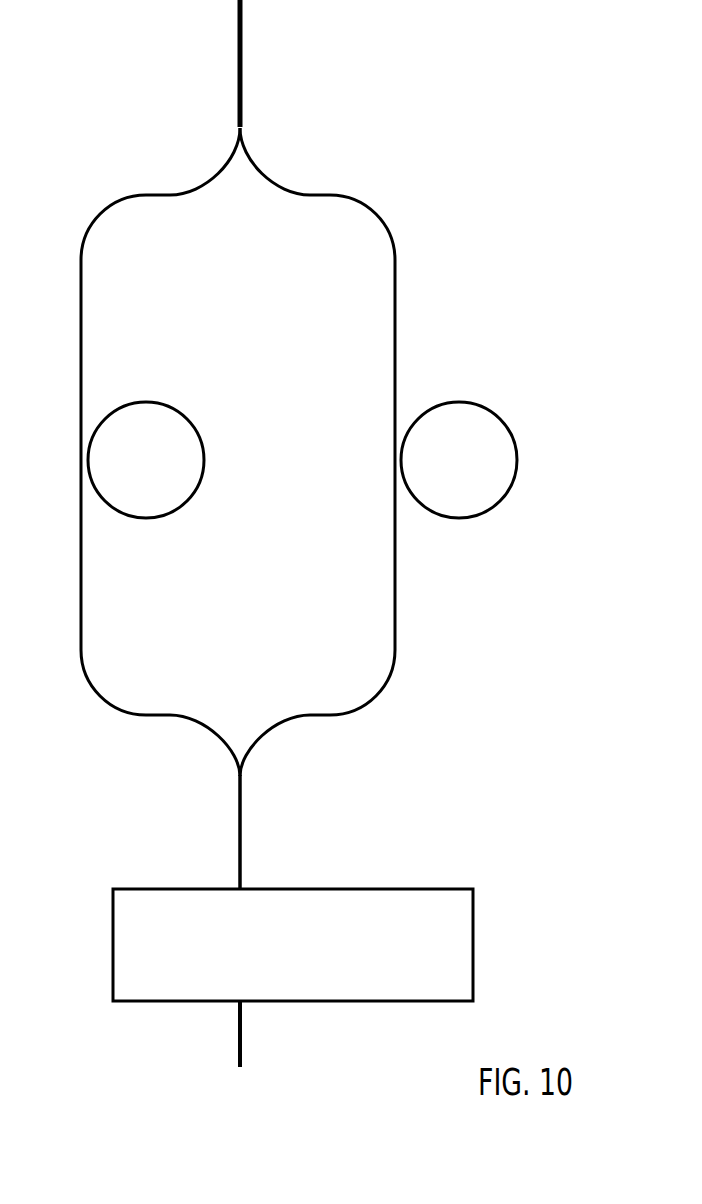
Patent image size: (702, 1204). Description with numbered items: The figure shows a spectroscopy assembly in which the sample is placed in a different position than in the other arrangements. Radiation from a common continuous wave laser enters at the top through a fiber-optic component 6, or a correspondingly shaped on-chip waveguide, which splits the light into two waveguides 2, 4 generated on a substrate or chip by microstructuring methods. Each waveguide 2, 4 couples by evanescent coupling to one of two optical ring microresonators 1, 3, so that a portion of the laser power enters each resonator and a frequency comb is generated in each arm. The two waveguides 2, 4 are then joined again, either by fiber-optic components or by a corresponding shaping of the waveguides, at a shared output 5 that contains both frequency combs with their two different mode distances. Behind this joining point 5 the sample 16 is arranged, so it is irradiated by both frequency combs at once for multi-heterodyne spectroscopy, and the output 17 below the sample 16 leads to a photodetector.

The optical ring microresonator 1 is at (139, 474).
The waveguide 2 is at (80, 333).
The optical ring microresonator 3 is at (452, 474).
The waveguide 4 is at (394, 333).
The shared output 5 is at (237, 843).
The fiber-optic component 6 is at (238, 44).
The sample 16 is at (424, 934).
The output 17 is at (238, 1045).